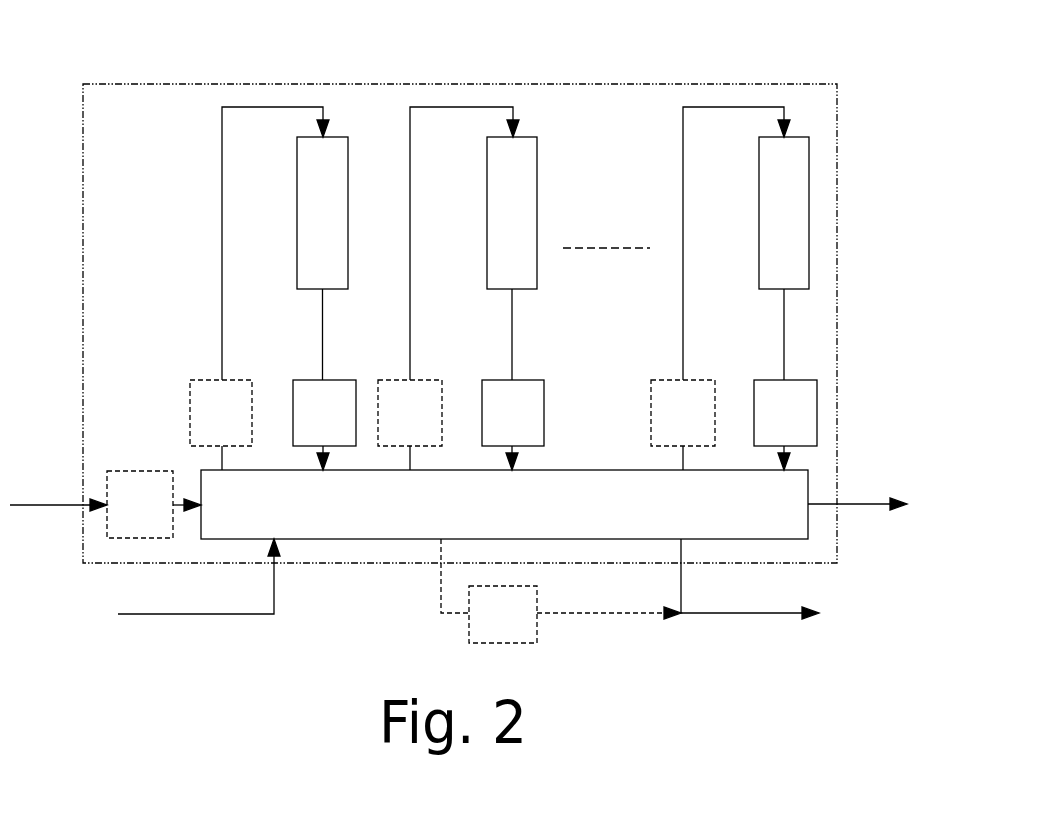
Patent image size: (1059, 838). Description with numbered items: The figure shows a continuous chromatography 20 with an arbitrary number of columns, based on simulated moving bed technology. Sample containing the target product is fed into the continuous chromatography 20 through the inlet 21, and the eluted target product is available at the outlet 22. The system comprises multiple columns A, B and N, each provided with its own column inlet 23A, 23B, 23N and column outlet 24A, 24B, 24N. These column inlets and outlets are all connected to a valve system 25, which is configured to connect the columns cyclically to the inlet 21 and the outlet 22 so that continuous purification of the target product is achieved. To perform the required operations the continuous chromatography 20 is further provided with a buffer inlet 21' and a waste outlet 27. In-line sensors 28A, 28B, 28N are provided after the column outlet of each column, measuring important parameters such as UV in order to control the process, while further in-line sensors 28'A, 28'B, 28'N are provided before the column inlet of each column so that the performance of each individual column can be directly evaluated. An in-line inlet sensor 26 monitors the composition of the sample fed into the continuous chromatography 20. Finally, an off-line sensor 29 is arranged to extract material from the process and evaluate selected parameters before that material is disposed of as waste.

The continuous chromatography 20 is at (163, 107).
The inlet 21 is at (58, 455).
The buffer inlet 21' is at (199, 594).
The outlet 22 is at (870, 504).
The column inlet 23A is at (328, 137).
The column inlet 23B is at (518, 137).
The column inlet 23N is at (789, 137).
The column outlet 24A is at (320, 290).
The column outlet 24B is at (508, 290).
The column outlet 24N is at (780, 290).
The valve system 25 is at (504, 504).
The in-line inlet sensor 26 is at (154, 504).
The waste outlet 27 is at (681, 588).
The in-line sensor 28'A is at (221, 425).
The in-line sensor 28A is at (324, 425).
The in-line sensor 28'B is at (410, 425).
The in-line sensor 28B is at (513, 425).
The in-line sensor 28'N is at (683, 425).
The in-line sensor 28N is at (785, 425).
The off-line sensor 29 is at (561, 591).